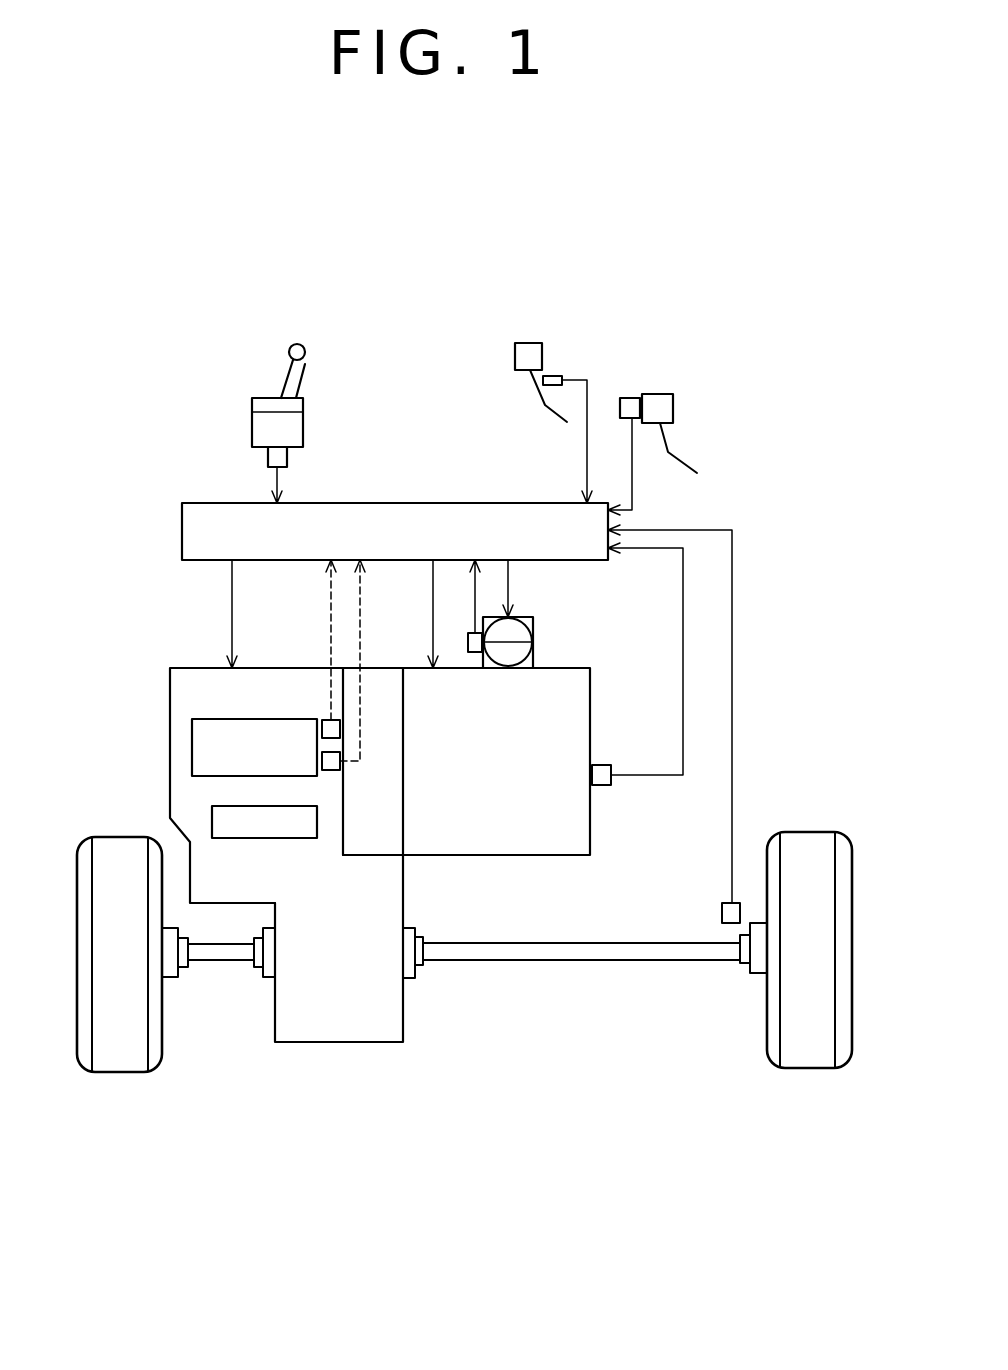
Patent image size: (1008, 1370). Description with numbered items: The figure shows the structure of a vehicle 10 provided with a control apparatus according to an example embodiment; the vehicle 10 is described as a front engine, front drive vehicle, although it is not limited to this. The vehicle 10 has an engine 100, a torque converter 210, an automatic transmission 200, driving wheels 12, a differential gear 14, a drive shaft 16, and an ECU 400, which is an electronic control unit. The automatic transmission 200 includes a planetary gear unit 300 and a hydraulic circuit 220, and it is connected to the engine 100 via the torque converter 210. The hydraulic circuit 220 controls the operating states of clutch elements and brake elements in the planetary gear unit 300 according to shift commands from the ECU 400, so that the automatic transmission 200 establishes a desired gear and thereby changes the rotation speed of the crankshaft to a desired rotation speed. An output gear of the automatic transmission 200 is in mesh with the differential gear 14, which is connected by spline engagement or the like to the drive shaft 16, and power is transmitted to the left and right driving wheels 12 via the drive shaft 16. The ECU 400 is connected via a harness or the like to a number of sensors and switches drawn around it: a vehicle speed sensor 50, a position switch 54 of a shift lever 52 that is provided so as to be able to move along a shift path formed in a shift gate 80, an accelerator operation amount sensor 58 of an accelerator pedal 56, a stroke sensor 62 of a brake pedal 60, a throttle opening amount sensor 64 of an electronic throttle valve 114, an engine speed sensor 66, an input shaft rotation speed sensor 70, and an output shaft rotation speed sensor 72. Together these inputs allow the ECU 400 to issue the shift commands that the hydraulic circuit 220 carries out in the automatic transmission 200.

The vehicle 10 is at (388, 218).
The driving wheels 12 is at (120, 1072).
The differential gear 14 is at (337, 1042).
The drive shaft 16 is at (220, 961).
The vehicle speed sensor 50 is at (722, 911).
The shift lever 52 is at (298, 372).
The position switch 54 is at (268, 459).
The accelerator pedal 56 is at (532, 399).
The accelerator operation amount sensor 58 is at (552, 376).
The brake pedal 60 is at (666, 434).
The stroke sensor 62 is at (632, 398).
The throttle opening amount sensor 64 is at (468, 645).
The engine speed sensor 66 is at (600, 785).
The input shaft rotation speed sensor 70 is at (323, 719).
The output shaft rotation speed sensor 72 is at (323, 773).
The shift gate 80 is at (303, 405).
The engine 100 is at (515, 855).
The electronic throttle valve 114 is at (528, 618).
The automatic transmission 200 is at (250, 668).
The torque converter 210 is at (378, 668).
The hydraulic circuit 220 is at (260, 838).
The planetary gear unit 300 is at (192, 752).
The ECU 400 is at (492, 503).